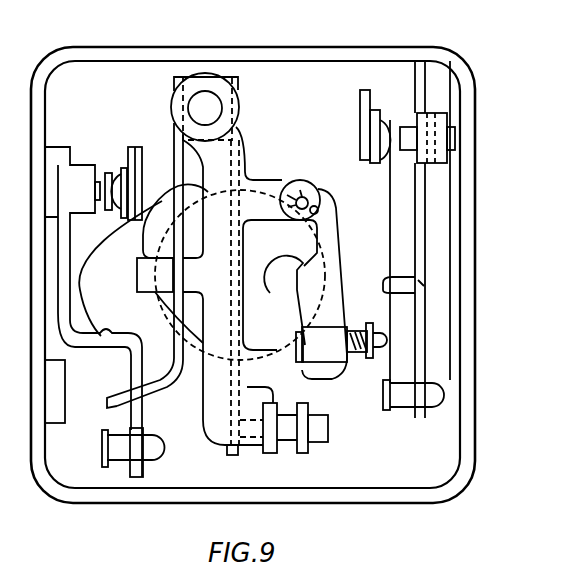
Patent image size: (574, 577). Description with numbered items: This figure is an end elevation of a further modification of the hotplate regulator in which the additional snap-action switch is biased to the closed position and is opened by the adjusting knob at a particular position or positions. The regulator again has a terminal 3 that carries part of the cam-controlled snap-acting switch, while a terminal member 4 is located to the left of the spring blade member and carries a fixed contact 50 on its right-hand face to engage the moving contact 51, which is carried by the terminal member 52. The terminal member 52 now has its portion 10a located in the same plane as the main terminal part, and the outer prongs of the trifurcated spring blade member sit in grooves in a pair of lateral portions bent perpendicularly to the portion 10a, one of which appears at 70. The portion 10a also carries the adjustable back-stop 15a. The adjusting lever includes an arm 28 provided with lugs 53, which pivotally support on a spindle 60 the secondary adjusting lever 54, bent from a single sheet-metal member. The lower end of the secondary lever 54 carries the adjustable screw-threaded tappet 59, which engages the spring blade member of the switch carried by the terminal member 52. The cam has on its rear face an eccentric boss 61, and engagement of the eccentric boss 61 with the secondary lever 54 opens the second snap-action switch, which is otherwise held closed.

The arm 28 is at (220, 80).
The terminal 3 is at (135, 147).
The lugs 53 is at (266, 183).
The spindle 60 is at (303, 194).
The eccentric boss 61 is at (281, 293).
The screw-threaded tappet 59 is at (368, 360).
The secondary adjusting lever 54 is at (315, 428).
The terminal member 4 is at (373, 112).
The fixed contact 50 is at (377, 158).
The moving contact 51 is at (390, 128).
The adjustable back-stop 15a is at (457, 141).
The portion 10a is at (422, 215).
The perpendicular portion 70 is at (408, 282).
The terminal member 52 is at (422, 358).